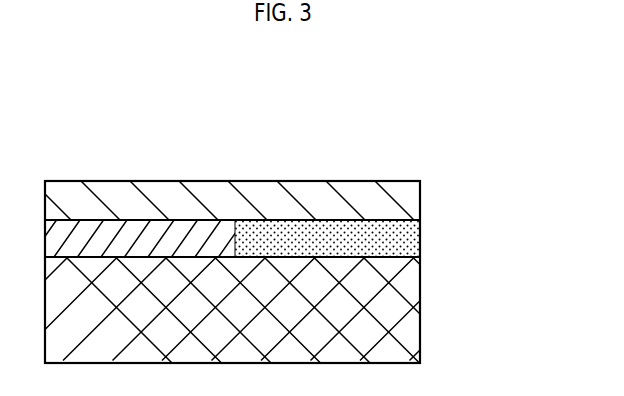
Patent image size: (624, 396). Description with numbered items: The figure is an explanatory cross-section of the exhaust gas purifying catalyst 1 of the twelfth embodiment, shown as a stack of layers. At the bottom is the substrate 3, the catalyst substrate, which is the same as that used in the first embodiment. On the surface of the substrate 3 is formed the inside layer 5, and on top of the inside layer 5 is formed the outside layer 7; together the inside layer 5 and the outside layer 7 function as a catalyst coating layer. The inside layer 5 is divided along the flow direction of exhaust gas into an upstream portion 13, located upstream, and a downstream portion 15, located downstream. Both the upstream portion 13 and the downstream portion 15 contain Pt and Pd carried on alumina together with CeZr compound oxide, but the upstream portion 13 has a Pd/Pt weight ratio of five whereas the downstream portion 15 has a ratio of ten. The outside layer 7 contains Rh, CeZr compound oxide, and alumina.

The exhaust gas purifying catalyst 1 is at (462, 108).
The substrate 3 is at (415, 310).
The inside layer 5 is at (180, 136).
The outside layer 7 is at (352, 190).
The upstream portion 13 is at (158, 230).
The downstream portion 15 is at (282, 230).